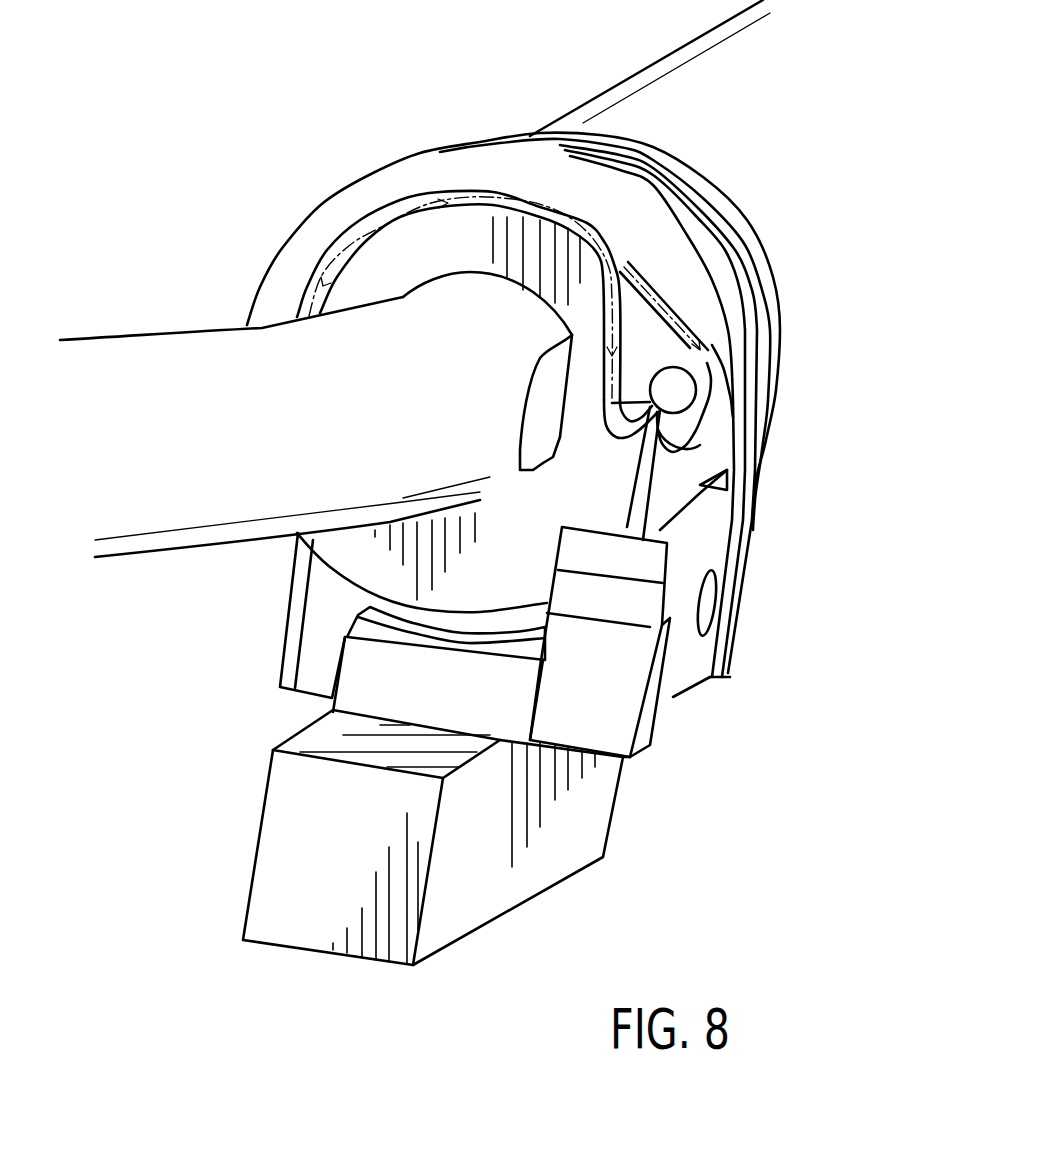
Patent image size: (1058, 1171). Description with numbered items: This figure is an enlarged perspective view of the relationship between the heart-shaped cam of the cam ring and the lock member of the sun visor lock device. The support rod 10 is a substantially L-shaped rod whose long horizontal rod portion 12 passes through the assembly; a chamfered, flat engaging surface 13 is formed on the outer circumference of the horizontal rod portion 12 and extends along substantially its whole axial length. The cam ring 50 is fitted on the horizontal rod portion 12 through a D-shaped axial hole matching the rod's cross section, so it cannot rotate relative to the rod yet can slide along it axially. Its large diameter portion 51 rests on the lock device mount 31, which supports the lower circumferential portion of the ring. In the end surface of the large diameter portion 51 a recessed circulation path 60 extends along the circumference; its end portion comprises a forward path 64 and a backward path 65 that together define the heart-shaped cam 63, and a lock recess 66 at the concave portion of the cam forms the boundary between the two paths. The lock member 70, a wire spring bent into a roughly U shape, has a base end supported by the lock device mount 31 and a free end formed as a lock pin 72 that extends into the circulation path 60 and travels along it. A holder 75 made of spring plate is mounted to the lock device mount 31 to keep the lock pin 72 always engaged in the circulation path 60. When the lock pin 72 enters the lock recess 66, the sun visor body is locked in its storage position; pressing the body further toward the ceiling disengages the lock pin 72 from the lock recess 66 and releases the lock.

The support rod 10 is at (176, 333).
The horizontal rod portion 12 is at (453, 323).
The engaging surface 13 is at (535, 443).
The lock device mount 31 is at (587, 873).
The cam ring 50 is at (409, 146).
The large diameter portion 51 is at (293, 260).
The recessed circulation path 60 is at (597, 227).
The heart-shaped cam 63 is at (675, 392).
The forward path 64 is at (717, 377).
The backward path 65 is at (613, 330).
The lock recess 66 is at (700, 493).
The lock member 70 is at (652, 510).
The lock pin 72 is at (712, 372).
The holder 75 is at (637, 563).